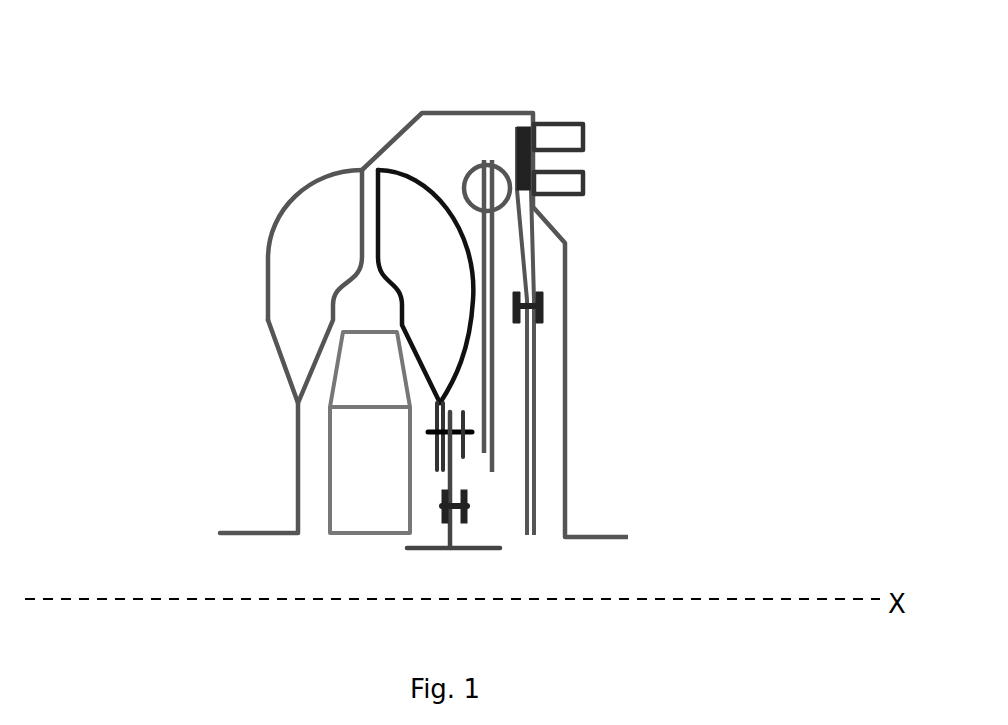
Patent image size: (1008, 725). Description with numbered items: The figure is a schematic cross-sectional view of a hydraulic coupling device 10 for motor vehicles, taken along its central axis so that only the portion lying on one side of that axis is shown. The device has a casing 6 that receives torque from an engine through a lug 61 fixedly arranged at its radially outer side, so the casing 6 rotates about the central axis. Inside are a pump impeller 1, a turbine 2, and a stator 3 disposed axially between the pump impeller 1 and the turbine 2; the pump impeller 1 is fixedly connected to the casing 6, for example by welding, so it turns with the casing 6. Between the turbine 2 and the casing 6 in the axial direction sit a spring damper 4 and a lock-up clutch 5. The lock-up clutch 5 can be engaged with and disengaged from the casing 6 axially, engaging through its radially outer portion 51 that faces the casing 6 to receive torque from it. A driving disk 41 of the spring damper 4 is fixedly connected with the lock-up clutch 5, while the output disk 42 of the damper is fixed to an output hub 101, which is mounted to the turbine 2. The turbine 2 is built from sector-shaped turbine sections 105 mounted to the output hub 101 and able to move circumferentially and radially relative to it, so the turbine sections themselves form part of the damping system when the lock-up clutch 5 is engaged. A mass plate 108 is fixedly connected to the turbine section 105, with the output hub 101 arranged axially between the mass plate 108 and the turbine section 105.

The hydraulic coupling device 10 is at (215, 152).
The pump impeller 1 is at (268, 260).
The turbine 2 is at (403, 172).
The stator 3 is at (343, 547).
The spring damper 4 is at (468, 163).
The driving disk 41 is at (503, 245).
The output disk 42 is at (485, 292).
The lock-up clutch 5 is at (535, 472).
The radially outer portion 51 is at (525, 130).
The casing 6 is at (568, 395).
The lug 61 is at (580, 130).
The output hub 101 is at (465, 545).
The turbine section 105 is at (427, 450).
The mass plate 108 is at (478, 455).